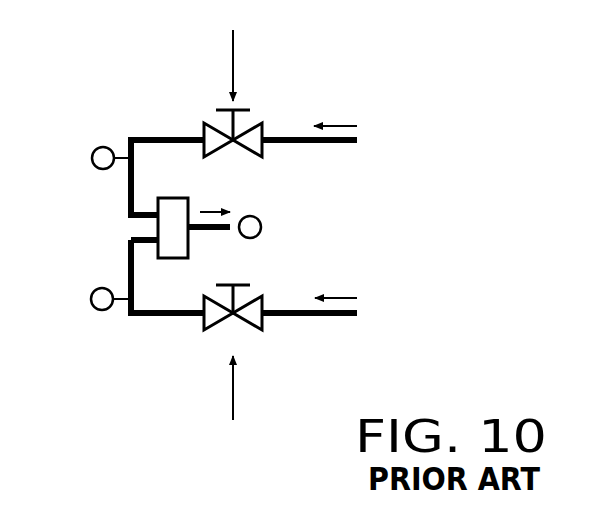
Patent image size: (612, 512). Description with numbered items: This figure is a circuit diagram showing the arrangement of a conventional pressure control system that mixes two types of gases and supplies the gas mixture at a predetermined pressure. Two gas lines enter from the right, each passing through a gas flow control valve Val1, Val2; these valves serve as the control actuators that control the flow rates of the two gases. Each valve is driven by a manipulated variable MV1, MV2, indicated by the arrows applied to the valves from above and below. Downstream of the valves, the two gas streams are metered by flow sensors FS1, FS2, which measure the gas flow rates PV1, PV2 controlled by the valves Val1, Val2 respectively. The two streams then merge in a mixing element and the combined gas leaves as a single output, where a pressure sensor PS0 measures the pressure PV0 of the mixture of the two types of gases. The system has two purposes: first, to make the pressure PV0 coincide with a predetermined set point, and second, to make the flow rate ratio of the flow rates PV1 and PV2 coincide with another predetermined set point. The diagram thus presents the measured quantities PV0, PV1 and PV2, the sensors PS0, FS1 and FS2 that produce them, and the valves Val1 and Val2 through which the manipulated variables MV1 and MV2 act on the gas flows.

The manipulated variable 1 (valve actuation signal) MV1 is at (256, 65).
The manipulated variable 2 (valve actuation signal) MV2 is at (256, 388).
The gas flow control valve Val1 is at (255, 119).
The gas flow control valve Val2 is at (255, 292).
The flow sensor FS1 is at (95, 149).
The flow sensor FS2 is at (95, 309).
The gas flow rate PV1 is at (106, 179).
The gas flow rate PV2 is at (105, 278).
The pressure sensor PS0 is at (258, 218).
The pressure PV0 is at (229, 249).